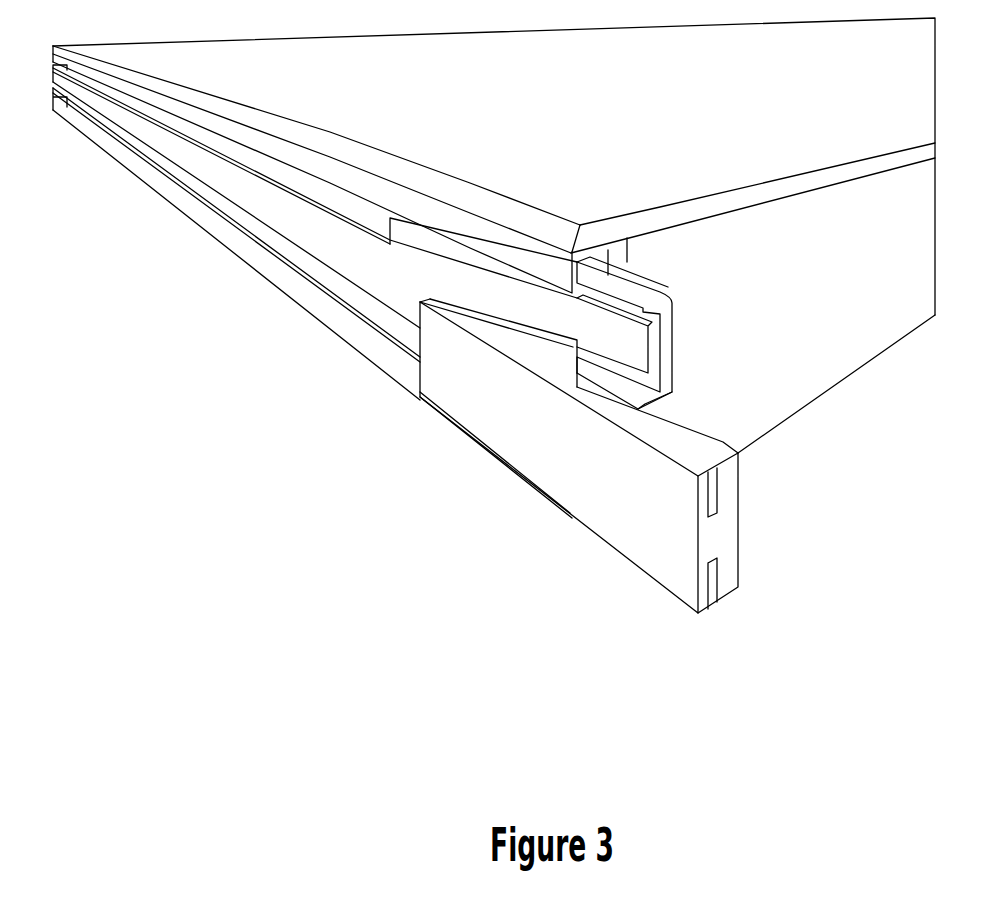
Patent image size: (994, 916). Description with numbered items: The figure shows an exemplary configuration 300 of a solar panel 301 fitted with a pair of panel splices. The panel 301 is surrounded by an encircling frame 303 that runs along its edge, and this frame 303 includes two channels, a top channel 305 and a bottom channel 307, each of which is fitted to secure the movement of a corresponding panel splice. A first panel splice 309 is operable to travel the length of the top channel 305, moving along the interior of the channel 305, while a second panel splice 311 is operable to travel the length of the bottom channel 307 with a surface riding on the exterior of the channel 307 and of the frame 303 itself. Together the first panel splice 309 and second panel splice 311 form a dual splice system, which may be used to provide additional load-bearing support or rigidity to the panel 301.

The configuration 300 is at (475, 394).
The panel 301 is at (632, 93).
The encircling frame 303 is at (622, 209).
The top channel 305 is at (49, 60).
The bottom channel 307 is at (48, 93).
The first panel splice 309 is at (676, 319).
The second panel splice 311 is at (745, 527).